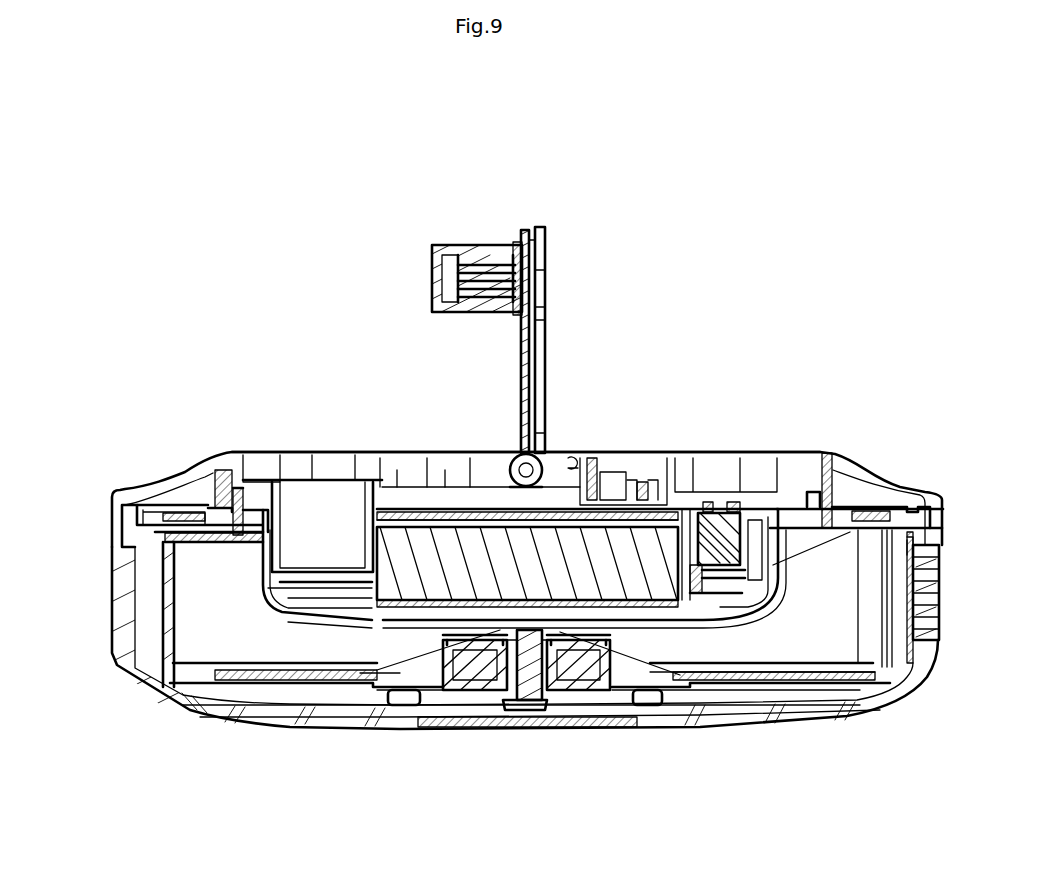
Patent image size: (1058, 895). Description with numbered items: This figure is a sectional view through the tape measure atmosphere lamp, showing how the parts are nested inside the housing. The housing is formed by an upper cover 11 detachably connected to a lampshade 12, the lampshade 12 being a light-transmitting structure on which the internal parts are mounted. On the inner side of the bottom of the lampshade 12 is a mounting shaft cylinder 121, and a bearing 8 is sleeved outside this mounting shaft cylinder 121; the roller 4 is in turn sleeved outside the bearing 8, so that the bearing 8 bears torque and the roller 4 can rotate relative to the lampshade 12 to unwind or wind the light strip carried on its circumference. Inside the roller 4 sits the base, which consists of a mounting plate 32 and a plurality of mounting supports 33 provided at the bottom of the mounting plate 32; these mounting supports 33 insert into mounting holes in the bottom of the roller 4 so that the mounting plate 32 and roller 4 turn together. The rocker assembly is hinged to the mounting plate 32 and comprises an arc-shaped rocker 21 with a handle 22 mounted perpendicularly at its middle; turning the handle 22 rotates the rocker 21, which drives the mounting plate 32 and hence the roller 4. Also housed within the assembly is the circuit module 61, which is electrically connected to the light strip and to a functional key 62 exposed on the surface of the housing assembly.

The upper cover 11 is at (148, 492).
The lampshade 12 is at (213, 703).
The mounting shaft cylinder 121 is at (570, 693).
The rocker 21 is at (543, 343).
The handle 22 is at (432, 253).
The mounting plate 32 is at (260, 466).
The mounting support 33 is at (287, 555).
The roller 4 is at (793, 555).
The circuit module 61 is at (627, 502).
The functional key 62 is at (568, 450).
The bearing 8 is at (445, 692).